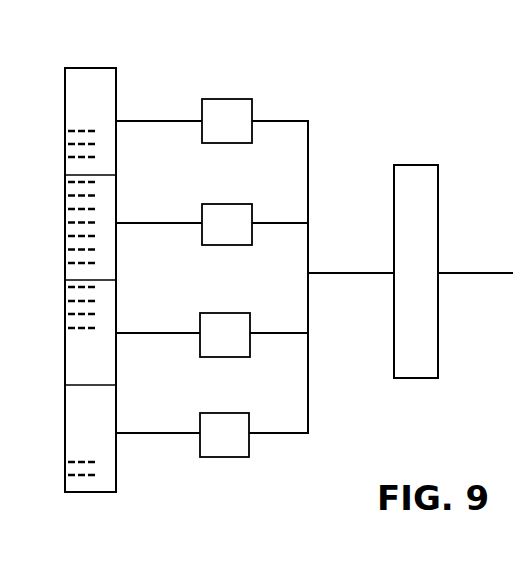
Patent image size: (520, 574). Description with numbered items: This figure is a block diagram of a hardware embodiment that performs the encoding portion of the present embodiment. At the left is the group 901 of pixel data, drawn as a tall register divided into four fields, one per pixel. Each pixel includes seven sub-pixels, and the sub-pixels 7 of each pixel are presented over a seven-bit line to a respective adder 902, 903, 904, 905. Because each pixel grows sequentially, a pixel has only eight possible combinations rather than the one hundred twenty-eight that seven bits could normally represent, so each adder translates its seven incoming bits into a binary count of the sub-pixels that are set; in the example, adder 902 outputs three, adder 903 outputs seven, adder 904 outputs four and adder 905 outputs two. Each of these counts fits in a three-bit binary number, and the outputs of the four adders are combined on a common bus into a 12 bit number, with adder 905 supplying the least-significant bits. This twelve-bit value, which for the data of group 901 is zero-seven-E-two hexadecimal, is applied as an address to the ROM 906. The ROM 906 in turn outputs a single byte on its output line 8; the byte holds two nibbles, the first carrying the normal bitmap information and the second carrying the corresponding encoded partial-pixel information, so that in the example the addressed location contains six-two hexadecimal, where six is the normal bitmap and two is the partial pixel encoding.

The group 901 is at (90, 67).
The sub-pixels 7 is at (163, 411).
The adder 902 is at (220, 98).
The adder 903 is at (213, 204).
The adder 904 is at (210, 313).
The adder 905 is at (222, 457).
The 12 bit number 12 is at (315, 284).
The ROM 906 is at (425, 378).
The output line 8 is at (460, 287).